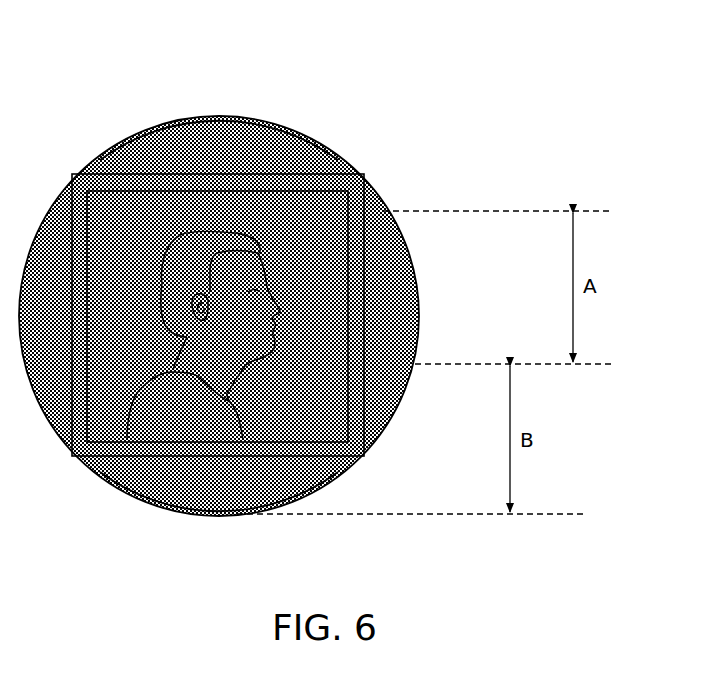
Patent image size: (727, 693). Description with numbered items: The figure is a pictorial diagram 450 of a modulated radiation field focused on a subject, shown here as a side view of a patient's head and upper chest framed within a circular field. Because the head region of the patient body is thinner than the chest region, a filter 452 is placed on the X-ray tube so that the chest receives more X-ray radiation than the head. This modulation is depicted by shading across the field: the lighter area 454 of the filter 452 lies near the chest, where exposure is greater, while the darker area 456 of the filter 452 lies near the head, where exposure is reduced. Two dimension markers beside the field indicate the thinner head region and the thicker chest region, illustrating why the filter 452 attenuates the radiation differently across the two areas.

The pictorial diagram 450 is at (154, 54).
The filter 452 is at (66, 456).
The lighter area 454 is at (202, 483).
The darker area 456 is at (215, 137).